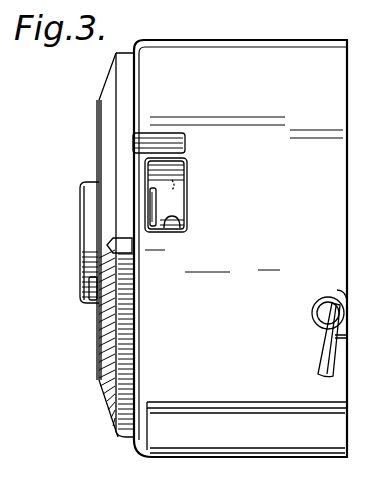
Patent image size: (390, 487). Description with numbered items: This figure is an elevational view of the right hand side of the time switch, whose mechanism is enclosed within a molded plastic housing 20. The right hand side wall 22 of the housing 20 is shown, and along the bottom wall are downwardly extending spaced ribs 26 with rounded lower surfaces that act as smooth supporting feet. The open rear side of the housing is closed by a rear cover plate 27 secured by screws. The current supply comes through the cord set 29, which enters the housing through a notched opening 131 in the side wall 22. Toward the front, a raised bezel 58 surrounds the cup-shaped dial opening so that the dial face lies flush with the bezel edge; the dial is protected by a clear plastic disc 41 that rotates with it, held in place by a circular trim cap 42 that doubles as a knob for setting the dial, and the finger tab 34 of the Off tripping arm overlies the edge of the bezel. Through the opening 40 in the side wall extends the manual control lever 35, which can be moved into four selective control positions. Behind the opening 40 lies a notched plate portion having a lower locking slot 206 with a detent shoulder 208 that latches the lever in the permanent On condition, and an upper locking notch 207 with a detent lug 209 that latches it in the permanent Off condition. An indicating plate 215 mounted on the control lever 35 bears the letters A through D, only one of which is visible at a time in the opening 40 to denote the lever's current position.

The housing 20 is at (289, 38).
The right hand side wall 22 is at (244, 205).
The ribs 26 is at (343, 430).
The rear cover plate 27 is at (345, 322).
The cord set 29 is at (320, 356).
The notched opening 131 is at (337, 292).
The finger tab 34 is at (80, 291).
The control lever 35 is at (150, 206).
The opening 40 is at (163, 145).
The clear plastic disc 41 is at (100, 331).
The trim cap 42 is at (81, 188).
The raised bezel 58 is at (120, 93).
The lower locking slot 206 is at (185, 220).
The upper locking notch 207 is at (183, 178).
The detent shoulder 208 is at (168, 232).
The detent lug 209 is at (186, 158).
The indicating plate 215 is at (150, 172).